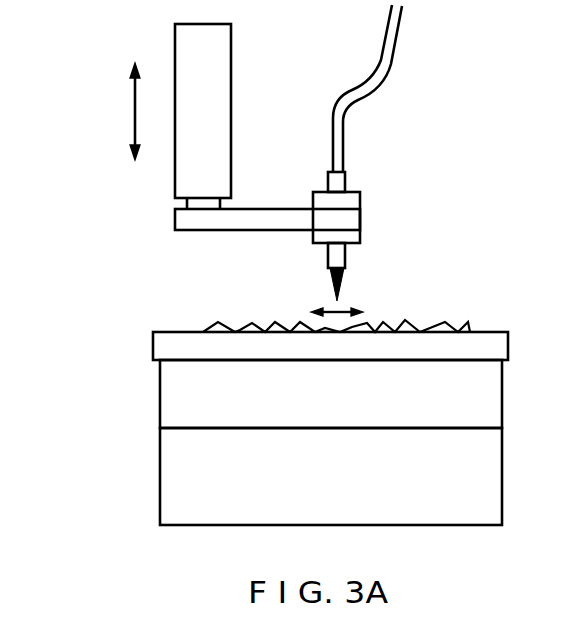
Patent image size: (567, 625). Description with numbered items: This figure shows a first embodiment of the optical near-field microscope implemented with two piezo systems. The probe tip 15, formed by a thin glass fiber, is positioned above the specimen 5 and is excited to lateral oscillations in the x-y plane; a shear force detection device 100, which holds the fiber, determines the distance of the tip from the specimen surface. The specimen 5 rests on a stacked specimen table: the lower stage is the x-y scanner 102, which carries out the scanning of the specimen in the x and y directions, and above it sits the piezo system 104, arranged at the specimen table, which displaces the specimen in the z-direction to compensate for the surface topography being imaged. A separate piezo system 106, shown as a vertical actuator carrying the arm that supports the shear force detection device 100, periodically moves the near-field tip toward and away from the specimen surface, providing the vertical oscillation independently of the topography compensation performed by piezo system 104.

The piezo system 106 is at (185, 165).
The shear force detection device 100 is at (358, 192).
The probe tip 15 is at (347, 288).
The specimen 5 is at (418, 323).
The piezo system 104 is at (172, 389).
The x,y-scanner 102 is at (172, 485).